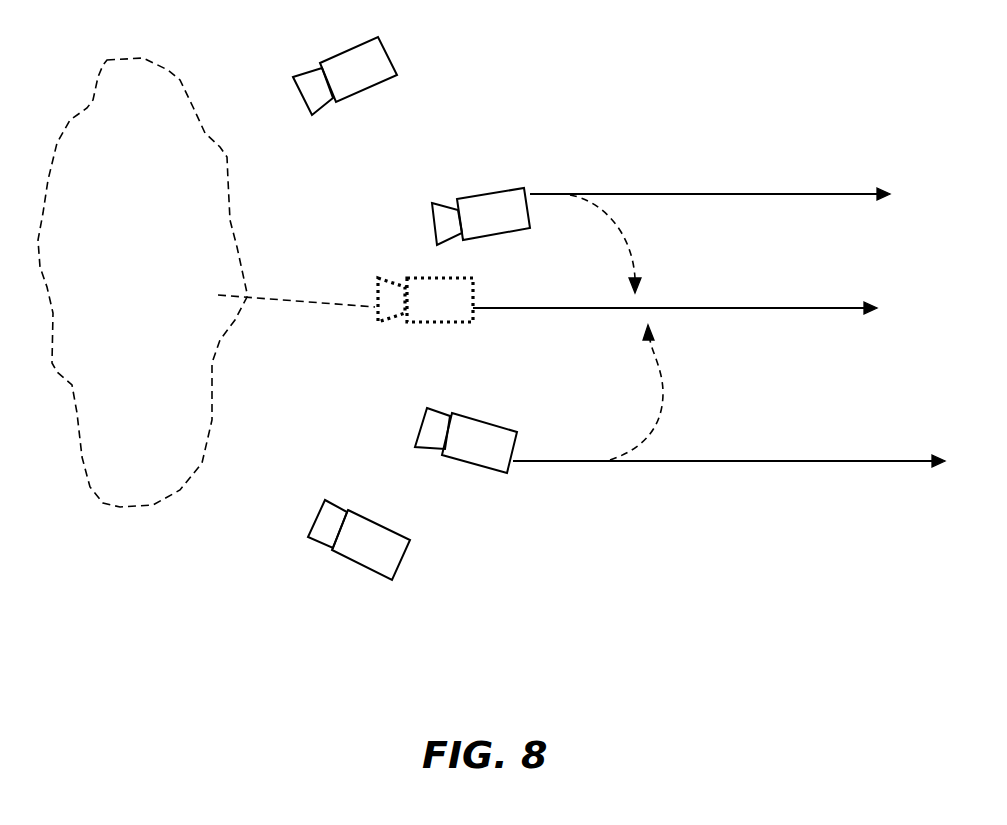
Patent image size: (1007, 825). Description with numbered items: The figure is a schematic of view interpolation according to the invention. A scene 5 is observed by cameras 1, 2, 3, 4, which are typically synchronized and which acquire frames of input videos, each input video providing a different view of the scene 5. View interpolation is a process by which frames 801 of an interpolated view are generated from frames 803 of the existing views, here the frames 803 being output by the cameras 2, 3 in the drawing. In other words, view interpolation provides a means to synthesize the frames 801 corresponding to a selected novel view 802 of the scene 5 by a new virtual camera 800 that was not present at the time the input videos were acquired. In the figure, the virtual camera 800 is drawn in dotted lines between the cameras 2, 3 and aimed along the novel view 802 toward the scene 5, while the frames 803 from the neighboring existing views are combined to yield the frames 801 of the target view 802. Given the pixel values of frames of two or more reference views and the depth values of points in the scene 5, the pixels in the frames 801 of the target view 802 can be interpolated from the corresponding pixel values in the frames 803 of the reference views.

The camera 1 is at (366, 32).
The camera 2 is at (500, 194).
The camera 3 is at (477, 417).
The camera 4 is at (393, 578).
The scene 5 is at (202, 467).
The virtual camera 800 is at (473, 322).
The frames of interpolated view 801 is at (688, 307).
The novel view 802 is at (298, 307).
The frames of existing views 803 is at (715, 193).